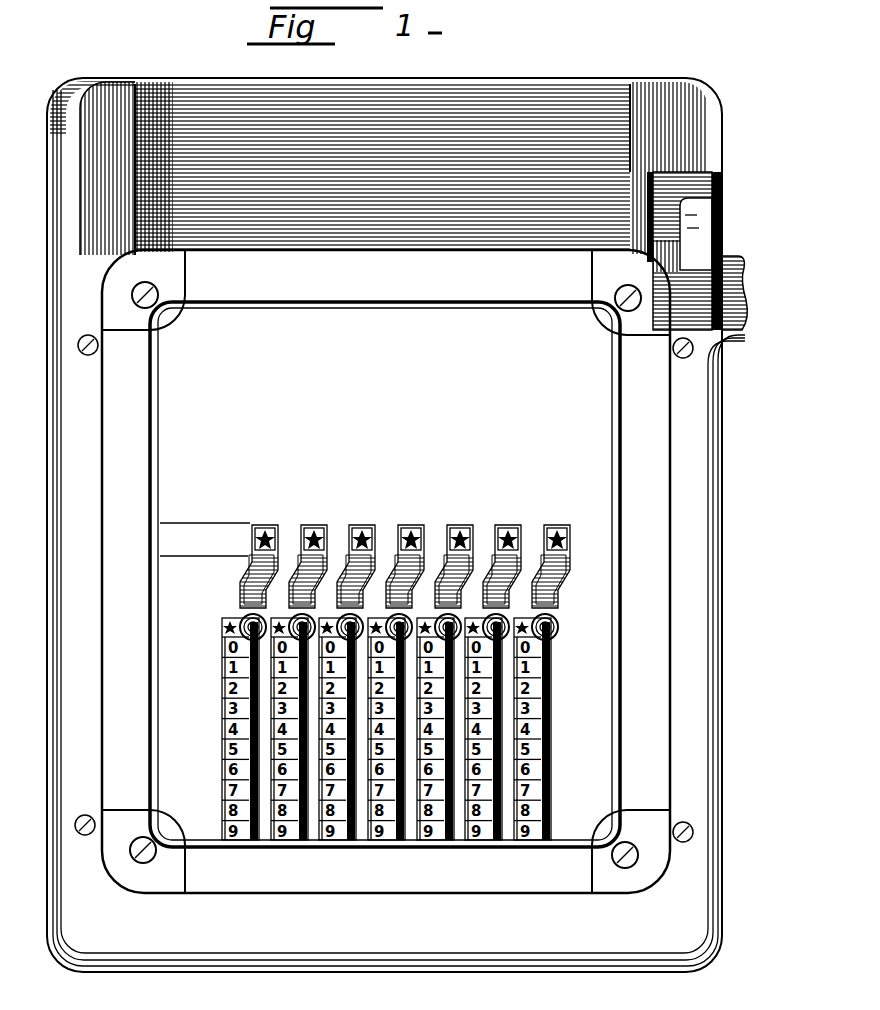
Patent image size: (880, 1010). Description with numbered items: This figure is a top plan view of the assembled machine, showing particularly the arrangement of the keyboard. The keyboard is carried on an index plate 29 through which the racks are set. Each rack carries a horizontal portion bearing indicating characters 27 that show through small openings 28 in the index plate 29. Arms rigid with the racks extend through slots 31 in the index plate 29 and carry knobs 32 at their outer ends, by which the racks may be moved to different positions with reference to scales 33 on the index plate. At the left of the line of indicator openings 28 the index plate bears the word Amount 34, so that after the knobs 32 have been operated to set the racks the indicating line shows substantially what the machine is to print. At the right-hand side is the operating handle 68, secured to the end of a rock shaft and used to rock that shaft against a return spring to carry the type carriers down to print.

The indicating characters 27 is at (467, 530).
The small openings 28 is at (404, 527).
The index plate 29 is at (592, 513).
The slots 31 is at (551, 691).
The knobs 32 is at (558, 626).
The scales 33 is at (549, 744).
The word Amount 34 is at (197, 531).
The operating handle 68 is at (693, 258).